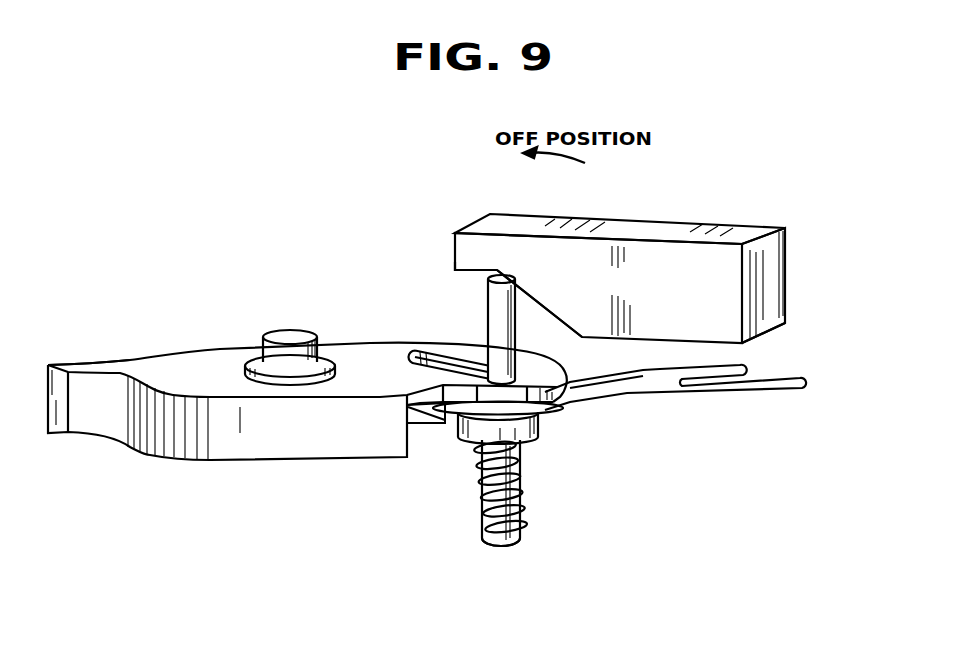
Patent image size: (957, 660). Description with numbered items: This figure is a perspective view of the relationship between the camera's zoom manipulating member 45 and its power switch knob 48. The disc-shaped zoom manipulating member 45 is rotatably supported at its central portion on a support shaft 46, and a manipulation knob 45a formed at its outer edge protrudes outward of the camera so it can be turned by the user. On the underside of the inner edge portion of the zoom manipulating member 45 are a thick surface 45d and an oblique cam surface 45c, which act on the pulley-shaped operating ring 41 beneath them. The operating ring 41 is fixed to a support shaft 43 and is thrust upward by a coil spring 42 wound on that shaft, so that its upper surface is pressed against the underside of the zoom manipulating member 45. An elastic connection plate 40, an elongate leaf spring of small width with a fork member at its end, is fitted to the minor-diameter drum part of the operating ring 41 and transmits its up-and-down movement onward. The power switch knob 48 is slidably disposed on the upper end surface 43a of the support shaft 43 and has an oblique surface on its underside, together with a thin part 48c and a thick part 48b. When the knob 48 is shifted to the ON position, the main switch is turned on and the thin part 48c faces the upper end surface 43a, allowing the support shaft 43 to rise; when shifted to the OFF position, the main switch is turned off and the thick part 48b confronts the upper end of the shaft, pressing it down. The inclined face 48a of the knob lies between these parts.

The elastic connection plate 40 is at (650, 383).
The operating ring 41 is at (540, 433).
The coil spring 42 is at (520, 485).
The support shaft 43 is at (498, 543).
The upper end surface of the support shaft 43a is at (488, 279).
The zoom manipulating member 45 is at (288, 453).
The manipulation knob 45a is at (90, 360).
The oblique cam surface 45c is at (447, 423).
The thick surface 45d is at (417, 425).
The support shaft 46 is at (285, 335).
The power switch knob 48 is at (507, 218).
The inclined surface of block 48a is at (547, 317).
The thick part 48b is at (758, 342).
The thin part 48c is at (450, 279).